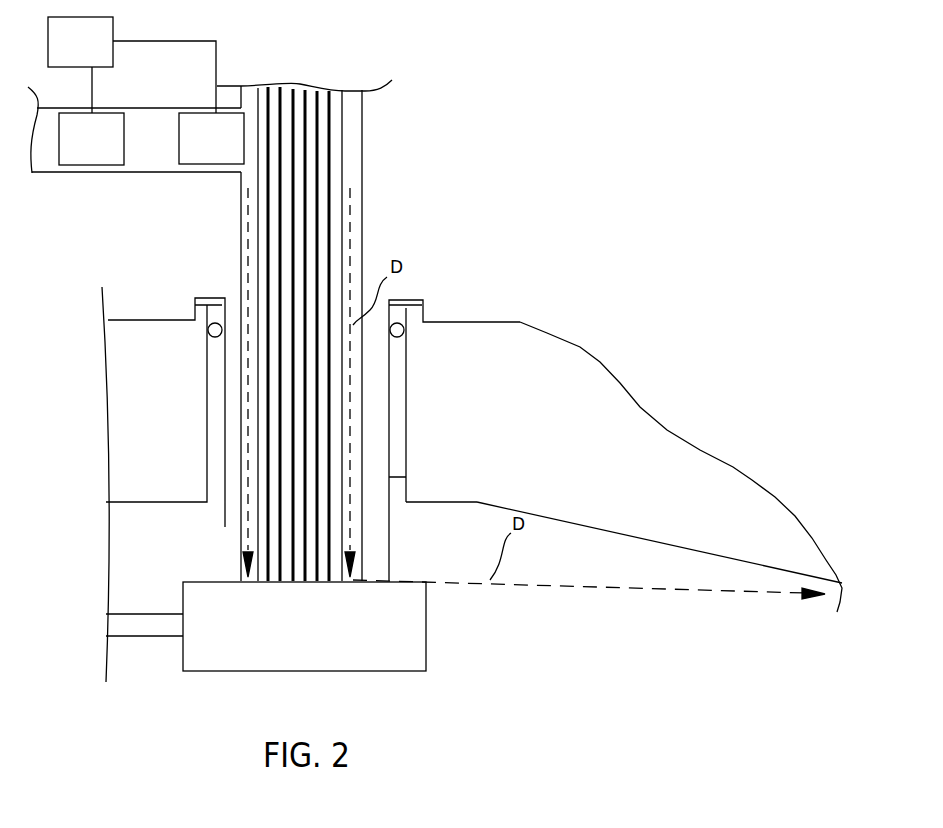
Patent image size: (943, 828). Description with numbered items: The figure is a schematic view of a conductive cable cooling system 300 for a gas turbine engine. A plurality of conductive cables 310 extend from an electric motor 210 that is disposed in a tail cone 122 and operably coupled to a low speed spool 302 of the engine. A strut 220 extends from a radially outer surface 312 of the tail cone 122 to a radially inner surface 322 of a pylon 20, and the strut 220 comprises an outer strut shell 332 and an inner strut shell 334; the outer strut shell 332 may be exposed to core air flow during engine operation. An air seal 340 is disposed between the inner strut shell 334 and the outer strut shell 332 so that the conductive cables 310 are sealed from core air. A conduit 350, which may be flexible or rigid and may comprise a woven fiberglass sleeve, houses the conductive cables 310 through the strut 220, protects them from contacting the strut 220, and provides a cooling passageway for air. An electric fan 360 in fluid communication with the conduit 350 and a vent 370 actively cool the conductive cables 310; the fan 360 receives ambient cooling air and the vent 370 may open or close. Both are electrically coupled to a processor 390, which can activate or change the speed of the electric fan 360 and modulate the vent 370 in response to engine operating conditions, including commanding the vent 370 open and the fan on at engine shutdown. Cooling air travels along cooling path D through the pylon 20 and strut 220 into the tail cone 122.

The conductive cable cooling system 300 is at (573, 153).
The conductive cables 310 is at (331, 240).
The conduit 350 is at (362, 210).
The radially inner surface 322 is at (408, 304).
The outer strut shell 332 is at (406, 400).
The inner strut shell 334 is at (406, 477).
The air seal 340 is at (210, 320).
The pylon 20 is at (468, 323).
The strut 220 is at (425, 413).
The tail cone 122 is at (648, 538).
The radially outer surface 312 is at (505, 508).
The electric motor 210 is at (316, 636).
The low speed spool 302 is at (113, 623).
The electric fan 360 is at (224, 148).
The vent 370 is at (104, 148).
The processor 390 is at (93, 51).